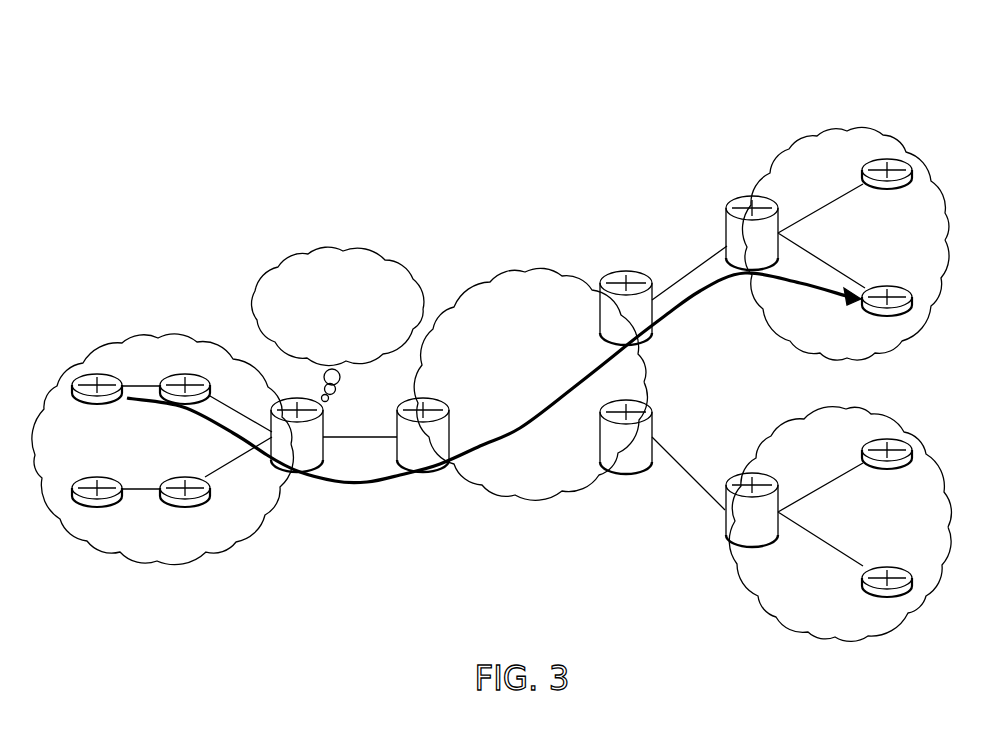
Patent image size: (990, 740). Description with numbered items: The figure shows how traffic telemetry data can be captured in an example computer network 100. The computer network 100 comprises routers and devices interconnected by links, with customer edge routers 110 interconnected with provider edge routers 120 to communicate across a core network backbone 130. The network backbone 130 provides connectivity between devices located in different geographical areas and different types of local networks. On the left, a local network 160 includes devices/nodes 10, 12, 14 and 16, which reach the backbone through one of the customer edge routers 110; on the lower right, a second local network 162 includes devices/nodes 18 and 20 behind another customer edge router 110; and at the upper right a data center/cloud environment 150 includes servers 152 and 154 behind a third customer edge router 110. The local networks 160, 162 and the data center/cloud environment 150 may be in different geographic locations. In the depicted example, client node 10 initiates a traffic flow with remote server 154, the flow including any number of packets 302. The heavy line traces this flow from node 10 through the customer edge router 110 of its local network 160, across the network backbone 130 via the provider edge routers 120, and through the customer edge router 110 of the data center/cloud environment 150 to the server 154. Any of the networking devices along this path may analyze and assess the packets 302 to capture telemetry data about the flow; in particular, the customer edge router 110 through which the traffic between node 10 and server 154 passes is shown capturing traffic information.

The computer network 100 is at (915, 62).
The client node 10 is at (97, 402).
The device/node 12 is at (185, 402).
The device/node 14 is at (97, 505).
The device/node 16 is at (185, 505).
The device/node 18 is at (887, 595).
The device/node 20 is at (887, 467).
The customer edge router 110 is at (524, 371).
The provider edge router 120 is at (524, 372).
The network backbone 130 is at (530, 384).
The data center/cloud environment 150 is at (820, 143).
The server 152 is at (887, 187).
The remote server 154 is at (887, 314).
The local network 160 is at (203, 565).
The local network 162 is at (762, 580).
The packet 302 is at (494, 399).